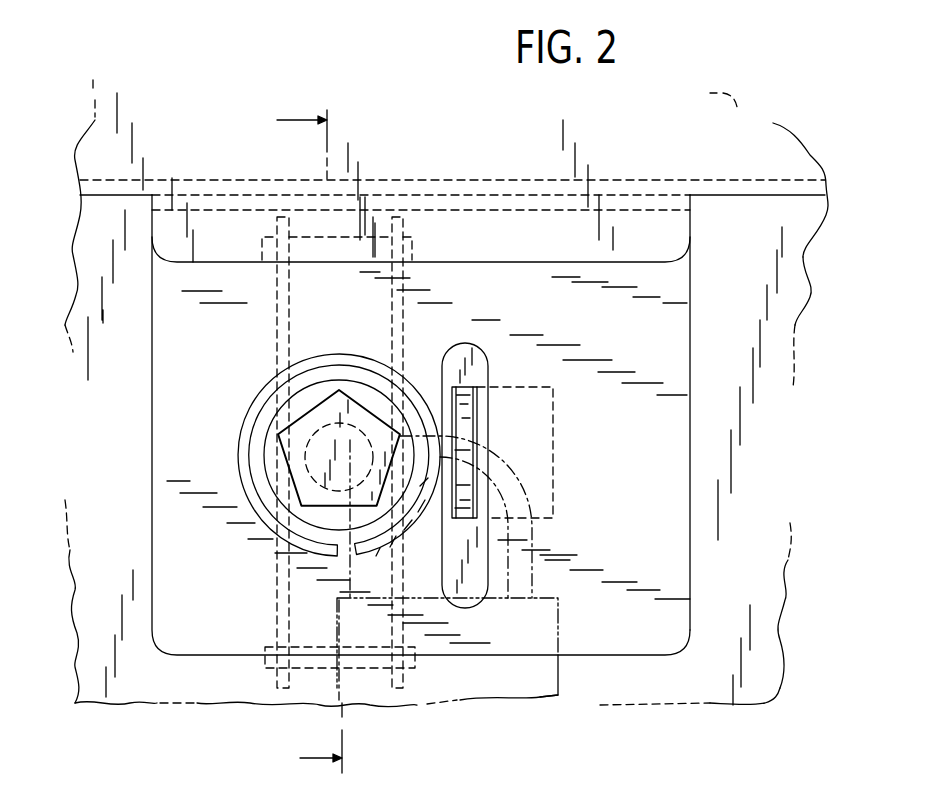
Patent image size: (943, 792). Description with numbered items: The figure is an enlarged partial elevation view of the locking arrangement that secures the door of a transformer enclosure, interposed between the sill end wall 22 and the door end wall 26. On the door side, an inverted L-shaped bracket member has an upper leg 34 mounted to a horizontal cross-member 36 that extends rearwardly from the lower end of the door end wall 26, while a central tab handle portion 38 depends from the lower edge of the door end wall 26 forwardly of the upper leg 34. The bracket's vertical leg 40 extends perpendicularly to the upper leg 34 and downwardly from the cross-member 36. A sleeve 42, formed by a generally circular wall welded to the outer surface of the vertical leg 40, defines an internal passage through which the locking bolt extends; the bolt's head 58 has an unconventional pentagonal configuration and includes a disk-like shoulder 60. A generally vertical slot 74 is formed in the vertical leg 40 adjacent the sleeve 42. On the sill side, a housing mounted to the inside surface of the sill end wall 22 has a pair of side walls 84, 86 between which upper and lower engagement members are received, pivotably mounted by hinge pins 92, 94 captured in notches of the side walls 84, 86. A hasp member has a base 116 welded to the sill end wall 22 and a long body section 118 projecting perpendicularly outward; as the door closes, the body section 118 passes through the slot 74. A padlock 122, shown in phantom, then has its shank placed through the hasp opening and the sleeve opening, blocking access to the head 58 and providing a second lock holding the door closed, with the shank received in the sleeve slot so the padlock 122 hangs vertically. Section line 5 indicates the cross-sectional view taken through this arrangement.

The section line 5- 5 is at (318, 440).
The sill end wall 22 is at (792, 273).
The door end wall 26 is at (760, 117).
The upper leg 34 is at (475, 212).
The horizontal cross-member 36 is at (452, 180).
The central tab handle portion 38 is at (460, 263).
The vertical leg 40 is at (677, 450).
The sleeve 42 is at (246, 397).
The head 58 is at (305, 410).
The disk-like shoulder 60 is at (365, 382).
The vertical slot 74 is at (480, 357).
The side wall 84 is at (267, 318).
The side wall 86 is at (404, 328).
The hinge pin 92 is at (414, 248).
The hinge pin 94 is at (268, 647).
The base 116 is at (553, 416).
The body section 118 is at (478, 402).
The padlock 122 is at (572, 603).